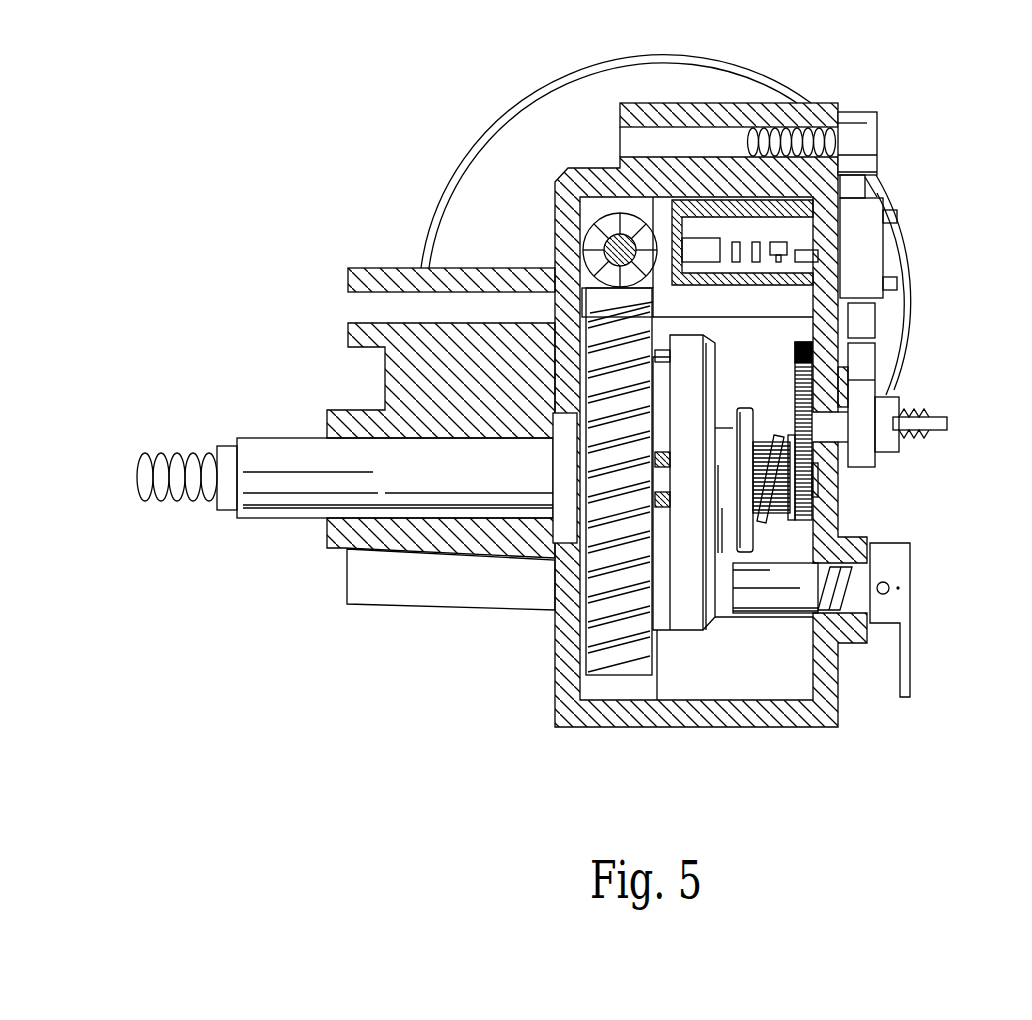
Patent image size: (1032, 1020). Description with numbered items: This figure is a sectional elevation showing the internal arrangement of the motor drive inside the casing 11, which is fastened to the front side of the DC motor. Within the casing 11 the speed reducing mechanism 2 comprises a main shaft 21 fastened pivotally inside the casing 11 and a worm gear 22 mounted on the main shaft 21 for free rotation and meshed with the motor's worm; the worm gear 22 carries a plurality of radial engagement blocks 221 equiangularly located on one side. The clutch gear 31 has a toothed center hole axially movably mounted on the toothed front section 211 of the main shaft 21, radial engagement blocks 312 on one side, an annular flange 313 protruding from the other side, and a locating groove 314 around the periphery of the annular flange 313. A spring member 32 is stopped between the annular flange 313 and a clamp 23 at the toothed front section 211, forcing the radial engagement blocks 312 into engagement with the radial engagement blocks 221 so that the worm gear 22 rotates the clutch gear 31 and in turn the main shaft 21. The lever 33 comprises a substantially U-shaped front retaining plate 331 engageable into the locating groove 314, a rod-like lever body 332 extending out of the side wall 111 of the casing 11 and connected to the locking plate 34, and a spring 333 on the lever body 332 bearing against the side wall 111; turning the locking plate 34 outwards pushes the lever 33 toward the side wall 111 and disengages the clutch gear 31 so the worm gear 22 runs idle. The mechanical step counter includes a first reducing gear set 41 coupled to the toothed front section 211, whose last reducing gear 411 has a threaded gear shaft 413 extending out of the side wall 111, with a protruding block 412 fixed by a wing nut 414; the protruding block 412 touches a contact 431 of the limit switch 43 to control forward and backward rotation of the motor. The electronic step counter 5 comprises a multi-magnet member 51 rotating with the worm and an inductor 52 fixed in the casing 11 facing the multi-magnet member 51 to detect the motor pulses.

The speed reducing mechanism 2 is at (345, 488).
The main shaft 21 is at (264, 438).
The toothed front section 211 is at (661, 596).
The worm gear 22 is at (590, 664).
The radial engagement blocks 221 is at (667, 438).
The clamp 23 is at (792, 433).
The electronic step counter 5 is at (583, 207).
The multi-magnet member 51 is at (616, 215).
The inductor 52 is at (703, 250).
The casing 11 is at (682, 733).
The side wall 111 is at (821, 115).
The clutch gear 31 is at (583, 554).
The radial engagement blocks 312 is at (657, 700).
The annular flange 313 is at (745, 540).
The locating groove 314 is at (727, 417).
The spring member 32 is at (790, 486).
The lever 33 is at (850, 671).
The front retaining plate 331 is at (723, 610).
The rod-like lever body 332 is at (862, 598).
The spring 333 is at (874, 570).
The locking plate 34 is at (935, 595).
The first reducing gear set 41 is at (940, 386).
The last reducing gear 411 is at (867, 325).
The protruding block 412 is at (862, 368).
The threaded gear shaft 413 is at (937, 429).
The wing nut 414 is at (898, 447).
The limit switch 43 is at (880, 249).
The contact 431 is at (818, 366).